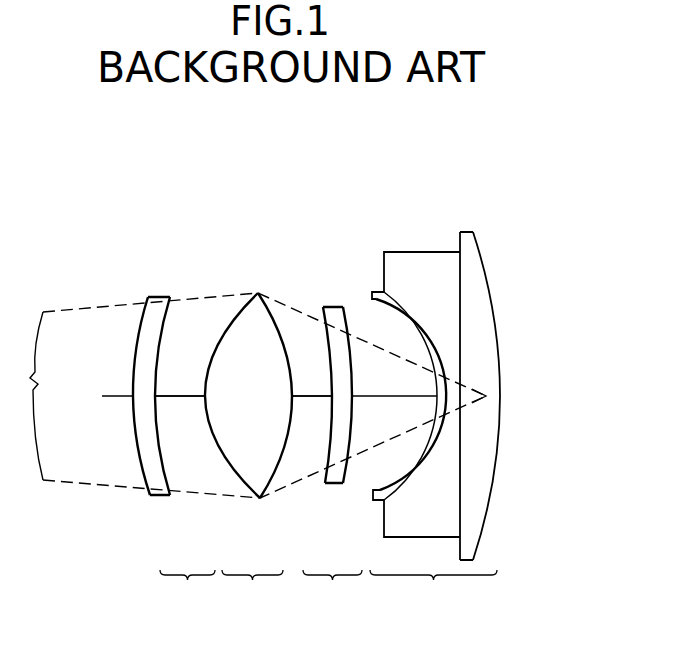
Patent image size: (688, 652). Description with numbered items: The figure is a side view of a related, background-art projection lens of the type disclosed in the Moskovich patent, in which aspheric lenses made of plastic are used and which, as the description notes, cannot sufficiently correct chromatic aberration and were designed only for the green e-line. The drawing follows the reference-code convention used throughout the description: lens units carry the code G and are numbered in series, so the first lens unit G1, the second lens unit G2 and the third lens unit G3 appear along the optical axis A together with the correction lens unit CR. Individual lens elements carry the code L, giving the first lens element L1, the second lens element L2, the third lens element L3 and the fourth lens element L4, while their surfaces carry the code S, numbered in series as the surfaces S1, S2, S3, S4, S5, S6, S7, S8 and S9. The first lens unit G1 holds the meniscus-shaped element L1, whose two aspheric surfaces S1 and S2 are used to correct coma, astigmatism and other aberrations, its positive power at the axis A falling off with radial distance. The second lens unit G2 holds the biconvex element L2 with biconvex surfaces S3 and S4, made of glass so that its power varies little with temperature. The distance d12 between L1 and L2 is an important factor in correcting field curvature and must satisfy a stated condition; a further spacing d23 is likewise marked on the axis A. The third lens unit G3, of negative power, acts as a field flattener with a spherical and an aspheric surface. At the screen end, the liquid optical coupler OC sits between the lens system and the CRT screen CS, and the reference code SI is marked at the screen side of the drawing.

The optical axis A is at (110, 394).
The first lens element L1 is at (166, 367).
The second lens element L2 is at (244, 387).
The third lens element L3 is at (315, 329).
The fourth lens element L4 is at (381, 381).
The first aspheric surface S1 is at (141, 452).
The second aspheric surface S2 is at (172, 313).
The third lens surface S3 is at (218, 452).
The fourth lens surface S4 is at (276, 425).
The fifth lens surface S5 is at (325, 340).
The sixth lens surface S6 is at (352, 335).
The seventh lens surface S7 is at (386, 483).
The eighth lens surface S8 is at (398, 428).
The ninth lens surface S9 is at (462, 497).
The distance between first and second lens elements d12 is at (179, 385).
The axial distance between L2 and L3 d23 is at (312, 385).
The first lens unit G1 is at (166, 397).
The second lens unit G2 is at (244, 418).
The correction lens unit CR is at (317, 396).
The third lens unit G3 is at (443, 392).
The liquid optical coupler OC is at (422, 256).
The CRT screen CS is at (515, 380).
The image surface SI is at (498, 423).